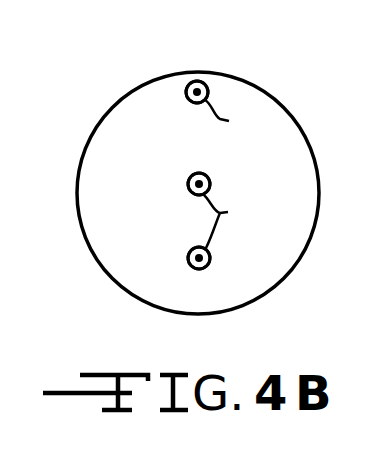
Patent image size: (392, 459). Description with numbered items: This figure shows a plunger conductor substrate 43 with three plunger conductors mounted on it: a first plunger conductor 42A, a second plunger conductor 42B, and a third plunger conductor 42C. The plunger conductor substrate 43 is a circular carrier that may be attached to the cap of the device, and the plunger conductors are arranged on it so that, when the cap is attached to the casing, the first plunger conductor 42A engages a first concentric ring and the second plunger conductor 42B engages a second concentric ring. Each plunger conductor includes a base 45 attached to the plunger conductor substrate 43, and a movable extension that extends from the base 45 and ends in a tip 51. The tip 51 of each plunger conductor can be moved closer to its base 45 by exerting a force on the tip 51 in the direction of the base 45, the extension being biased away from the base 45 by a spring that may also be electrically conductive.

The plunger conductor substrate 43 is at (304, 131).
The first plunger conductor 42A is at (216, 177).
The second plunger conductor 42B is at (210, 254).
The plunger conductor 42C is at (221, 86).
The base 45 is at (230, 174).
The tip 51 is at (189, 100).